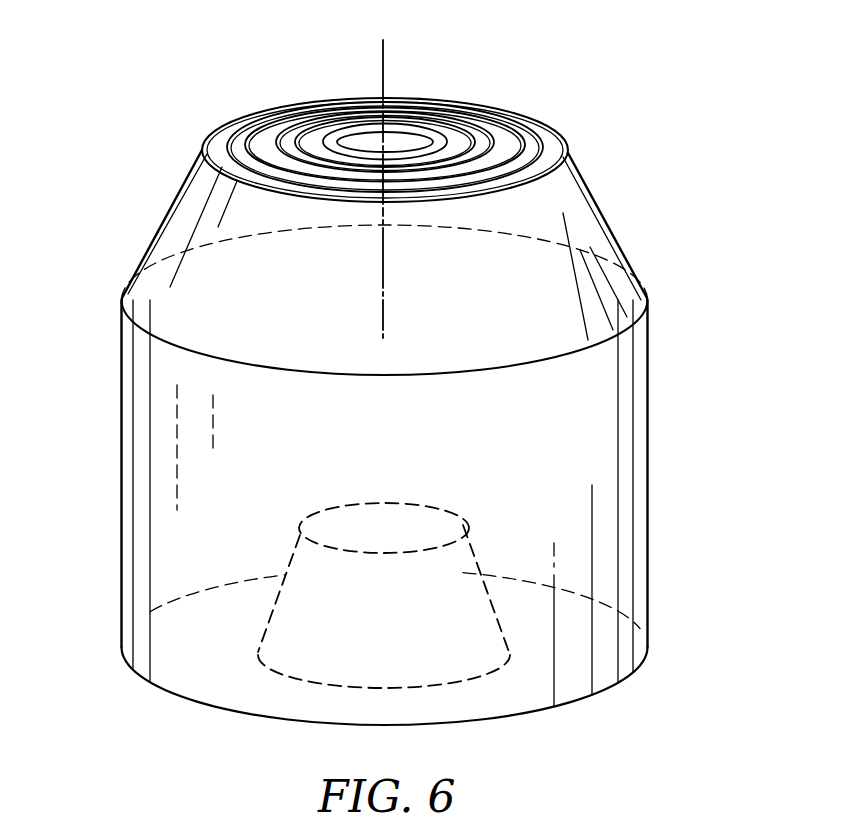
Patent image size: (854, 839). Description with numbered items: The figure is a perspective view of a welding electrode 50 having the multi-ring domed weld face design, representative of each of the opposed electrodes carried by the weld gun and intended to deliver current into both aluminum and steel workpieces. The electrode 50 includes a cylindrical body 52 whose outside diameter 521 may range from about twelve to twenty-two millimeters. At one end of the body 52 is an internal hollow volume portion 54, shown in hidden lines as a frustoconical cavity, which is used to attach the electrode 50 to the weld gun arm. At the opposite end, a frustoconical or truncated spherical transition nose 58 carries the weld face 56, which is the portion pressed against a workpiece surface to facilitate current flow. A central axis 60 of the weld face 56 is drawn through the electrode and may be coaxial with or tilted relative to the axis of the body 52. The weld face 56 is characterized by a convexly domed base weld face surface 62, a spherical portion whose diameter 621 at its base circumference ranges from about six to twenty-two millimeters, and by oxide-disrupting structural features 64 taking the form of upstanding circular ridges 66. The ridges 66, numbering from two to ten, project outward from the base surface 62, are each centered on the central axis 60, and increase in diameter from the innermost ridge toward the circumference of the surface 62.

The welding electrode 50 is at (650, 214).
The cylindrical body 52 is at (569, 531).
The internal hollow volume portion 54 is at (282, 573).
The weld face 56 is at (325, 96).
The transition nose 58 is at (172, 222).
The central axis 60 is at (383, 268).
The convexly domed base weld face surface 62 is at (548, 150).
The oxide-disrupting structural features 64 is at (468, 99).
The upstanding circular ridges 66 is at (481, 140).
The outside diameter 521 is at (646, 460).
The diameter 621 is at (202, 0).